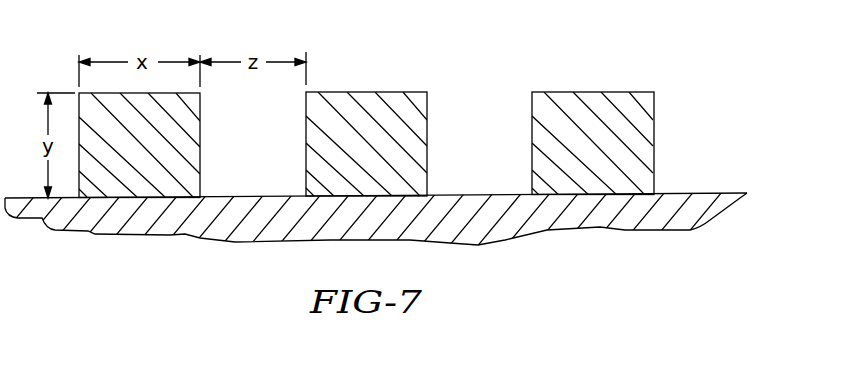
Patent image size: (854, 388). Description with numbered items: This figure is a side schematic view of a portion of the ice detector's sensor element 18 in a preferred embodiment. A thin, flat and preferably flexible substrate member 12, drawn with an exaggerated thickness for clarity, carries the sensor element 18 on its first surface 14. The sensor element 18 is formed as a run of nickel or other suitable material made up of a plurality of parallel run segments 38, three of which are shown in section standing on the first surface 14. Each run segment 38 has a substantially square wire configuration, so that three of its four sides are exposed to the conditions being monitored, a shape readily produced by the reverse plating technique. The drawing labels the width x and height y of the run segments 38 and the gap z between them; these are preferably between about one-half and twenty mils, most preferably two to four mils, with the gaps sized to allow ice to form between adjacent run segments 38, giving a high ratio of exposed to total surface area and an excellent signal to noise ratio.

The substrate member 12 is at (462, 205).
The first surface 14 is at (688, 192).
The sensor element 18 is at (378, 129).
The run segments 38 is at (190, 145).